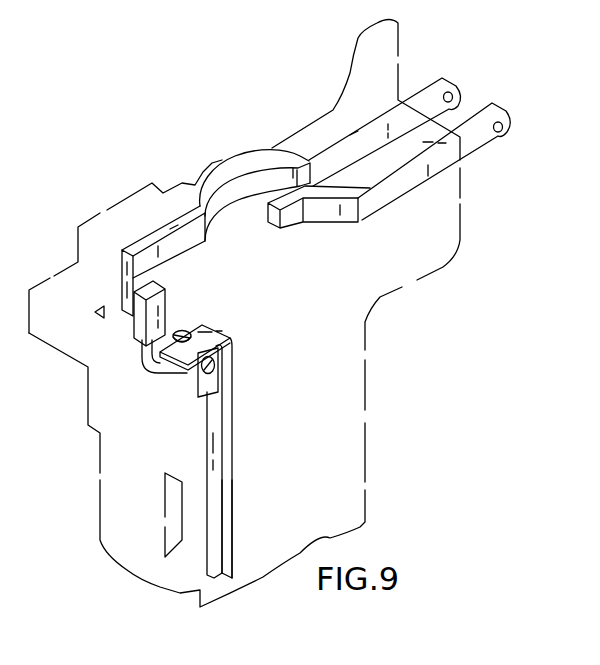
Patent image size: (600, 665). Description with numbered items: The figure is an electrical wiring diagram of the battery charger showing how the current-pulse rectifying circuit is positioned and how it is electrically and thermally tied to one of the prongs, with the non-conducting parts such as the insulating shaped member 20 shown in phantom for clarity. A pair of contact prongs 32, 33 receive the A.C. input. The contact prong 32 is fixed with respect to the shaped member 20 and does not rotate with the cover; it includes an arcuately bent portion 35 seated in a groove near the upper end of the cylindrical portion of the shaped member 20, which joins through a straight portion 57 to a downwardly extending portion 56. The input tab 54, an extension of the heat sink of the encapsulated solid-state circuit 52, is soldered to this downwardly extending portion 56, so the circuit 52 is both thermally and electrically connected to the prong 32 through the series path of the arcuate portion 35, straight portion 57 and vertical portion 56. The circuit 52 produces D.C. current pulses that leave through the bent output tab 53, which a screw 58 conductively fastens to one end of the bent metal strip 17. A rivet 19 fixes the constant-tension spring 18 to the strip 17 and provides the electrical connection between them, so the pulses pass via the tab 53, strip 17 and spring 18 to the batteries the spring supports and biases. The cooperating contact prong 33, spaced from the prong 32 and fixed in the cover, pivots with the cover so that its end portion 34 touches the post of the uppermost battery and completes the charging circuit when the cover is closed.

The bent metal strip 17 is at (200, 392).
The constant-tension spring 18 is at (230, 558).
The rivet 19 is at (211, 362).
The shaped member 20 is at (377, 384).
The contact prong 32 is at (386, 124).
The contact prong 33 is at (505, 119).
The end portion 34 is at (296, 224).
The arcuately bent portion 35 is at (236, 178).
The encapsulated solid-state circuit 52 is at (147, 333).
The first conductive tab 53 is at (147, 372).
The input tab 54 is at (148, 295).
The downwardly extending portion 56 is at (122, 261).
The straight portion 57 is at (162, 232).
The screw 58 is at (184, 330).